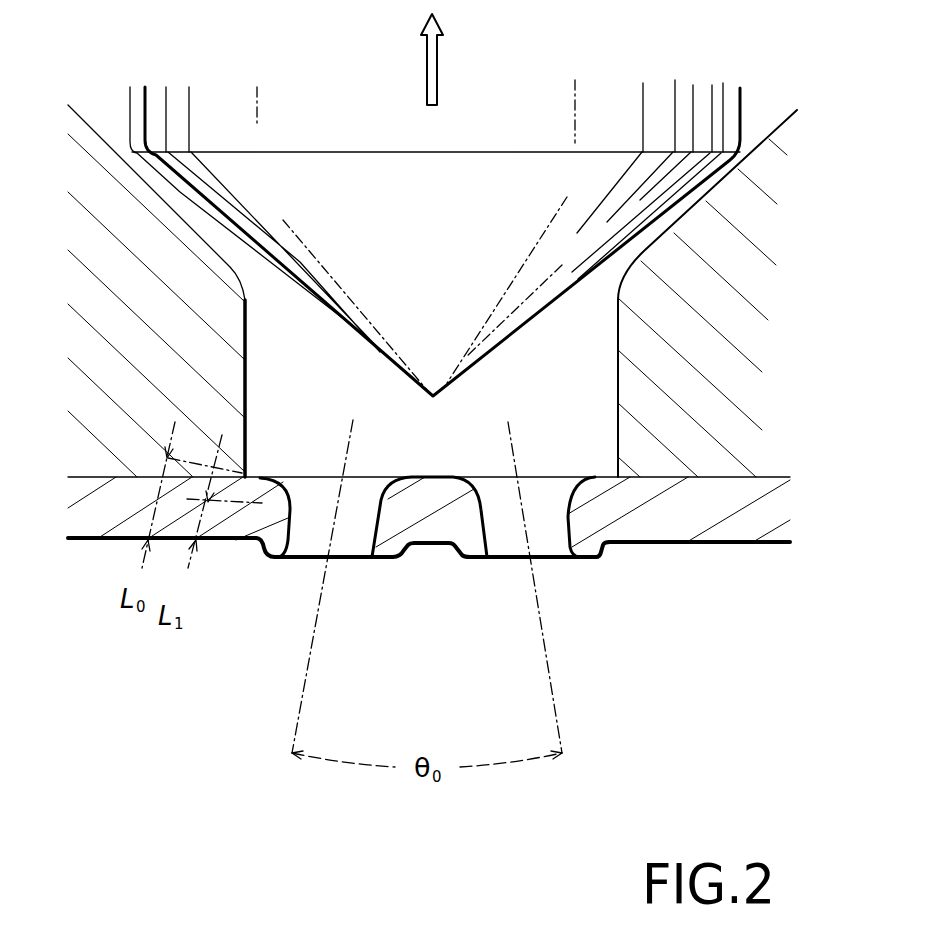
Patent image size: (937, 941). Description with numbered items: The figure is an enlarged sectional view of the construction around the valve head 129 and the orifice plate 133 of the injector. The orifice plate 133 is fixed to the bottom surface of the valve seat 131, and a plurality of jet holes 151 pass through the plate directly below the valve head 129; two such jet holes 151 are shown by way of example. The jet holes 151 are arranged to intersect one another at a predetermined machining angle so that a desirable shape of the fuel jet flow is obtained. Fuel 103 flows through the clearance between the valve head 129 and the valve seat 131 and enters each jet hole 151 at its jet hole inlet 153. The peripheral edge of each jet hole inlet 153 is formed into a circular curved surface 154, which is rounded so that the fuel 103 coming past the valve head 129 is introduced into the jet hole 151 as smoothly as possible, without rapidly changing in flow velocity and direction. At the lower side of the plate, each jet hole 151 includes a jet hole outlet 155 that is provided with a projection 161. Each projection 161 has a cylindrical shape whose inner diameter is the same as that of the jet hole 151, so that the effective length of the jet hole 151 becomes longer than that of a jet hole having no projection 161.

The fuel 103 is at (270, 315).
The valve head 129 is at (623, 210).
The valve seat 131 is at (53, 535).
The orifice plate 133 is at (90, 517).
The jet hole 151 is at (330, 560).
The jet hole inlet 153 is at (335, 459).
The circular curved surface 154 is at (294, 461).
The jet hole outlet 155 is at (311, 576).
The projection 161 is at (257, 560).